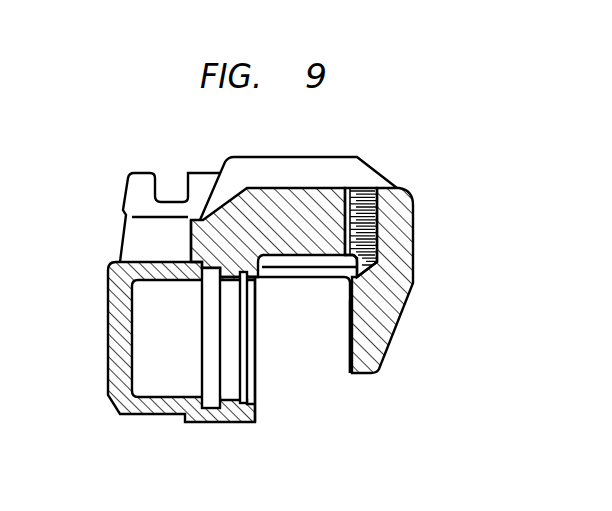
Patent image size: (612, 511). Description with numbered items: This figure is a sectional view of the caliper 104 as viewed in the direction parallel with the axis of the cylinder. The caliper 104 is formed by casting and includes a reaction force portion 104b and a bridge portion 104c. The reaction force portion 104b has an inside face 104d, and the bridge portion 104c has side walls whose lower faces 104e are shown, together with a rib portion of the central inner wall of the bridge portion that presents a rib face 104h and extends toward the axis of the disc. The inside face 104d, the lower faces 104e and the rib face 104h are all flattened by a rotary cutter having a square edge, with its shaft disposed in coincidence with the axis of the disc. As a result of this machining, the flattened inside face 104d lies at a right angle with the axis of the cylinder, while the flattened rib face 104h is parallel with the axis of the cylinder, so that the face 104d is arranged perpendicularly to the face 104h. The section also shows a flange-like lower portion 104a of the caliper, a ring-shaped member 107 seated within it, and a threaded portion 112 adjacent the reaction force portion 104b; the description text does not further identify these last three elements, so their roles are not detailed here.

The caliper 104 is at (260, 128).
The flange portion of mount member 104a is at (120, 358).
The reaction force portion 104b is at (375, 320).
The bridge portion 104c is at (288, 188).
The inside face of the reaction force portion 104d is at (347, 337).
The lower faces of the side walls of the bridge portion 104e is at (312, 273).
The face of the rib portion 104h is at (295, 255).
The ring member 107 is at (170, 393).
The threaded portion 112 is at (380, 218).